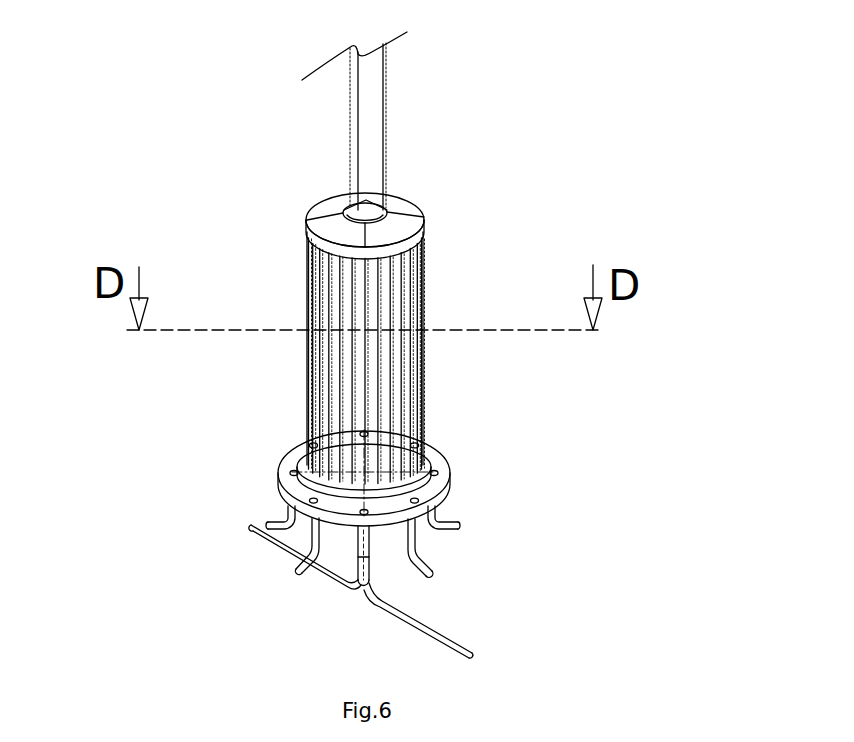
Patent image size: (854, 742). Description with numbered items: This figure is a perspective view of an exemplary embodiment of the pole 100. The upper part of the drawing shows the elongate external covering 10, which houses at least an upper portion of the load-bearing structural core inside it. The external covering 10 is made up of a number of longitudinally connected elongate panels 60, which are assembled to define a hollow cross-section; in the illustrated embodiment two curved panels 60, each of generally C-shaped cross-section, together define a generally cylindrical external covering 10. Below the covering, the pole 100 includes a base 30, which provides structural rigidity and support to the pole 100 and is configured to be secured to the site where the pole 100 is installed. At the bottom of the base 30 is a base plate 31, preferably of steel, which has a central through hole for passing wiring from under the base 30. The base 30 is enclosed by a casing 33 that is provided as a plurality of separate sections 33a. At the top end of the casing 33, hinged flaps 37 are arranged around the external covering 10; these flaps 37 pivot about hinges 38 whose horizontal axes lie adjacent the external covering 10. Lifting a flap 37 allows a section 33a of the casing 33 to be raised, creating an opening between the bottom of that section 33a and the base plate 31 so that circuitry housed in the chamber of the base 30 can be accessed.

The pole 100 is at (598, 178).
The external covering 10 is at (370, 93).
The panels 60 is at (350, 130).
The base 30 is at (290, 273).
The hinged flaps 37 is at (402, 228).
The hinges 38 is at (380, 225).
The casing 33 is at (430, 413).
The sections 33a is at (317, 370).
The base plate 31 is at (440, 477).